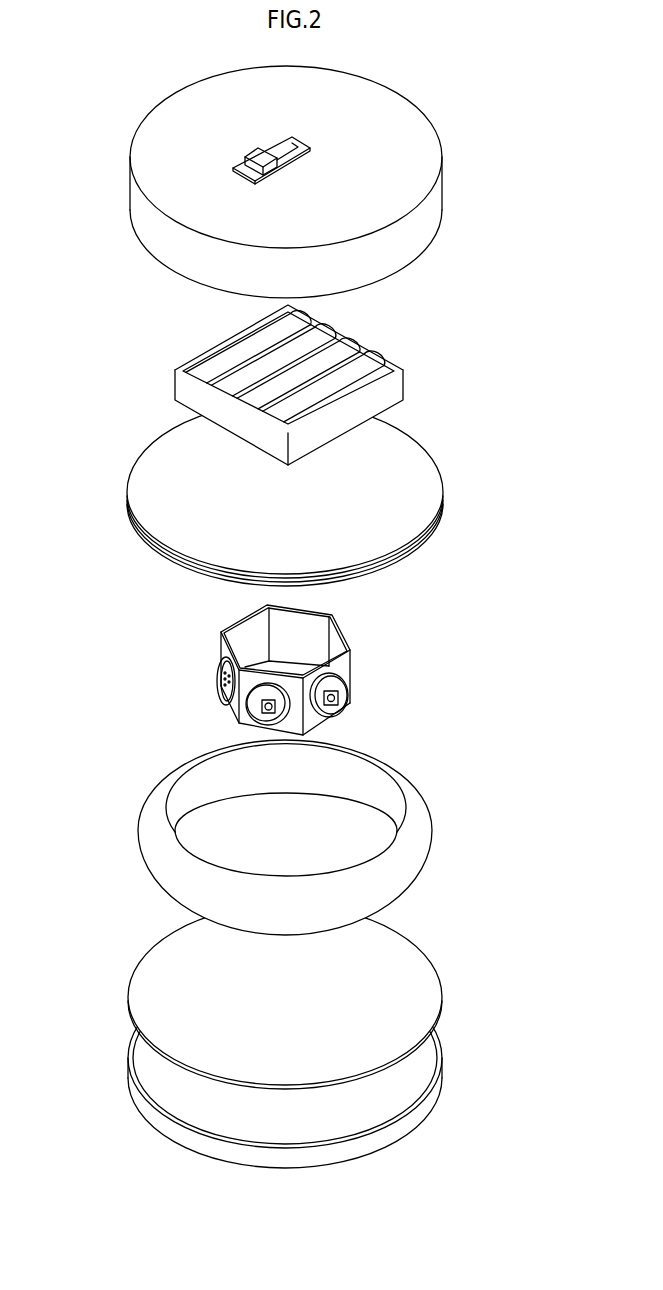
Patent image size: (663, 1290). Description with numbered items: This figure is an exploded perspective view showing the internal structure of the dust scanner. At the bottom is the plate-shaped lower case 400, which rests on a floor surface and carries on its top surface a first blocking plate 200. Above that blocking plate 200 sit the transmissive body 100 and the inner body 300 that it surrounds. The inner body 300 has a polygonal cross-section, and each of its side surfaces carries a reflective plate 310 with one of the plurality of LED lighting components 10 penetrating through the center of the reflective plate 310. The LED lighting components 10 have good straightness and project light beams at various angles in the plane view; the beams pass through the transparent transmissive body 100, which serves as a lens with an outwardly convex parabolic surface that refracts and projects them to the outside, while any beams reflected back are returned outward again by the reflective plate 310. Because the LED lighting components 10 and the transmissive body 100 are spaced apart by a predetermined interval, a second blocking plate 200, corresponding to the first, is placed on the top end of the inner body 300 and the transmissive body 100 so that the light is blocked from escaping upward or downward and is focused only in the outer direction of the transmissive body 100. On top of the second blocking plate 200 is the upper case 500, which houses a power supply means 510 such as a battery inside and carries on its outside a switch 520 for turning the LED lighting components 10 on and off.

The upper case 500 is at (425, 217).
The switch 520 is at (244, 162).
The power supply means 510 is at (347, 358).
The blocking plate 200 is at (157, 470).
The inner body 300 is at (343, 628).
The reflective plate 310 is at (328, 708).
The LED lighting component 10 is at (265, 708).
The transmissive body 100 is at (413, 865).
The lower case 400 is at (430, 1100).